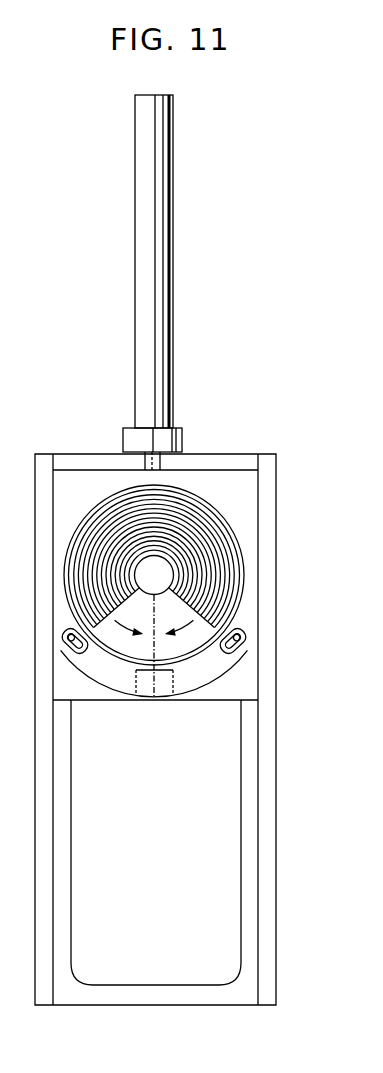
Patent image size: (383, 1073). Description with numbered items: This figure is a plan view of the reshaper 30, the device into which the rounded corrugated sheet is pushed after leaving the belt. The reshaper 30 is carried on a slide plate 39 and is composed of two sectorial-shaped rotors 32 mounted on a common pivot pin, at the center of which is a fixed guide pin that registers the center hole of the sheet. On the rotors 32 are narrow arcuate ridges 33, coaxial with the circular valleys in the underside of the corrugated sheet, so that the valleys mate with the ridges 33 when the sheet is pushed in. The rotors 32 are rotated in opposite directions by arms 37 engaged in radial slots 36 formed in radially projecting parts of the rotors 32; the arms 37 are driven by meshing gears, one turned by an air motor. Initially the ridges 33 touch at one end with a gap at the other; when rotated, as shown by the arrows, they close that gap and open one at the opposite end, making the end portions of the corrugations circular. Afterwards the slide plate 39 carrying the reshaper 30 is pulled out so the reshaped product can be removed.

The reshaper 30 is at (203, 552).
The rotors 32 is at (220, 542).
The arcuate ridges 33 is at (236, 565).
The radial slots 36 is at (234, 632).
The arms 37 is at (242, 650).
The slide plate 39 is at (195, 478).